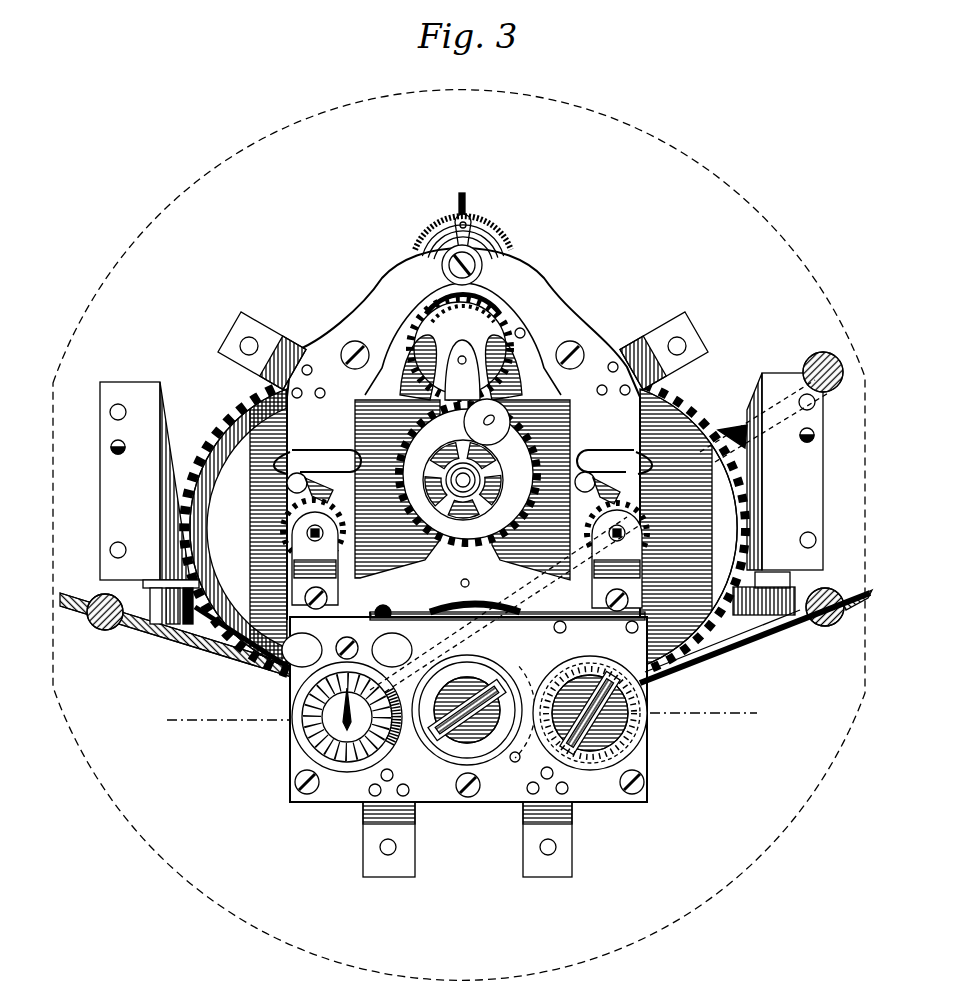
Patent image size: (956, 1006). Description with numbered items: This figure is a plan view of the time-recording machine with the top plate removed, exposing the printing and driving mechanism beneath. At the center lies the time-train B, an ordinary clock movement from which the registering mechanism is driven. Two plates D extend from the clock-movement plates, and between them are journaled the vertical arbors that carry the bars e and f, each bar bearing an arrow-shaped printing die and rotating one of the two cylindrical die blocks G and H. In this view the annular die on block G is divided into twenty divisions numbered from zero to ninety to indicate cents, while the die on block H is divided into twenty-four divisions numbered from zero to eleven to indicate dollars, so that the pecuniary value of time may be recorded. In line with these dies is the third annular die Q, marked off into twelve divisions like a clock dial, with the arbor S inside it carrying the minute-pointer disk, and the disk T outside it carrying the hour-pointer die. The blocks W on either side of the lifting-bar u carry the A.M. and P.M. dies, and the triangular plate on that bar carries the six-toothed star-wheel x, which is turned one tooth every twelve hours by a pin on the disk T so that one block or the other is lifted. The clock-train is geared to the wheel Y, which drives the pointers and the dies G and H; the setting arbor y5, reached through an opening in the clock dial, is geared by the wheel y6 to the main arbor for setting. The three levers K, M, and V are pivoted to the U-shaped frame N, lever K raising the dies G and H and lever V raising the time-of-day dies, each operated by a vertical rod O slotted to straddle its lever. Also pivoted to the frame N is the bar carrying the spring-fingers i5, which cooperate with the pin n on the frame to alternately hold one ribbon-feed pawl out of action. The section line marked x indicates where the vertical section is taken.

The time-train B is at (533, 293).
The lever M is at (228, 645).
The wheel y6 is at (423, 578).
The arbor y5 is at (397, 618).
The star-wheel x is at (300, 608).
The horizontal bar u is at (370, 620).
The wheel Y is at (415, 610).
The disk T is at (395, 742).
The block W is at (295, 664).
The annular die Q is at (320, 726).
The arbor S is at (338, 709).
The cylindrical block G is at (473, 667).
The plate D is at (510, 667).
The bar e is at (524, 707).
The cylindrical block H is at (600, 672).
The bar f is at (592, 672).
The U-shaped bar or frame N is at (824, 494).
The pin n is at (787, 584).
The spring-finger i5 is at (145, 624).
The vertical rod O is at (97, 622).
The lever K is at (748, 637).
The lever V is at (740, 434).